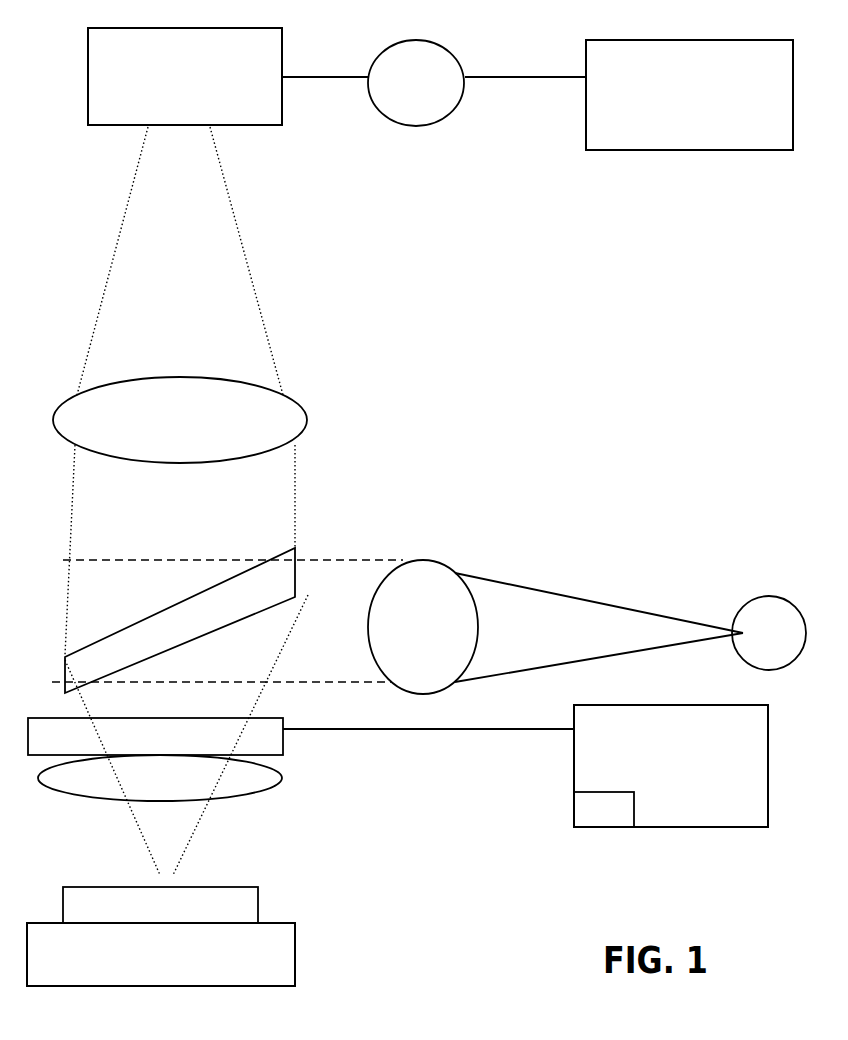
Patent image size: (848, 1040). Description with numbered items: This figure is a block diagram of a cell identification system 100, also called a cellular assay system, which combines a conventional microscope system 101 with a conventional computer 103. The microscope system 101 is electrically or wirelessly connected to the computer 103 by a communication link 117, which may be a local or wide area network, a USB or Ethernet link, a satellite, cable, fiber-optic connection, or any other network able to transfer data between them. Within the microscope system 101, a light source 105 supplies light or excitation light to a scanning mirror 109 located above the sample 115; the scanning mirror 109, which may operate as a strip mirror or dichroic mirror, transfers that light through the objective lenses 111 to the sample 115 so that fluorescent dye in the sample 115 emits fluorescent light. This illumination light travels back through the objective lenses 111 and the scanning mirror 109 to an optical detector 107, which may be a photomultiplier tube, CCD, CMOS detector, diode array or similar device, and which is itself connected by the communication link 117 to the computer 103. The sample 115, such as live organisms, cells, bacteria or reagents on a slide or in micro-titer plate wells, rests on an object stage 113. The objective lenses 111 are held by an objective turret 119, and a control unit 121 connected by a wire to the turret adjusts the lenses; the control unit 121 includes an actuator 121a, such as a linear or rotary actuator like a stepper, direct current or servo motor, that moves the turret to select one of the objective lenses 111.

The cell identification system 100 is at (662, 466).
The microscope system 101 is at (270, 162).
The computer 103 is at (670, 122).
The light source 105 is at (747, 646).
The optical detector 107 is at (165, 104).
The scanning mirror 109 is at (295, 550).
The objective lenses 111 is at (270, 779).
The object stage 113 is at (140, 981).
The sample 115 is at (192, 921).
The communication link 117 is at (395, 99).
The objective turret 119 is at (257, 730).
The control unit 121 is at (652, 779).
The actuator 121a is at (604, 809).